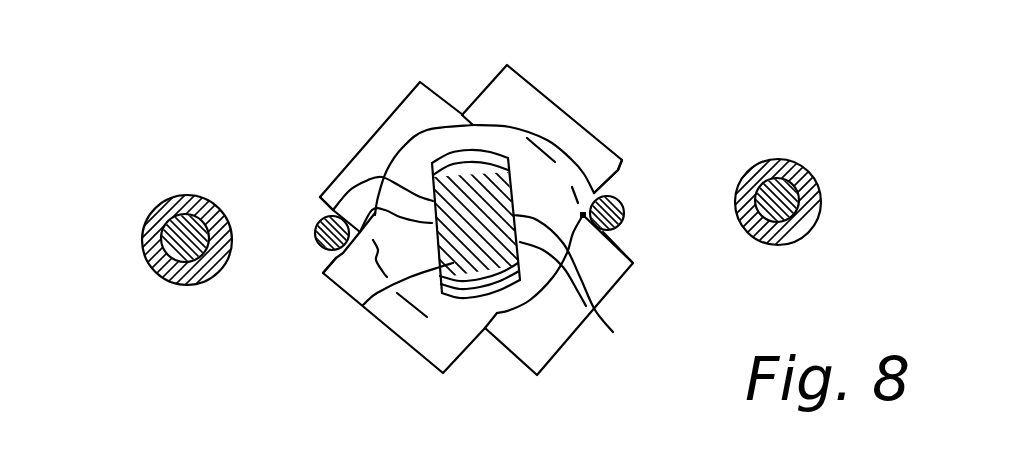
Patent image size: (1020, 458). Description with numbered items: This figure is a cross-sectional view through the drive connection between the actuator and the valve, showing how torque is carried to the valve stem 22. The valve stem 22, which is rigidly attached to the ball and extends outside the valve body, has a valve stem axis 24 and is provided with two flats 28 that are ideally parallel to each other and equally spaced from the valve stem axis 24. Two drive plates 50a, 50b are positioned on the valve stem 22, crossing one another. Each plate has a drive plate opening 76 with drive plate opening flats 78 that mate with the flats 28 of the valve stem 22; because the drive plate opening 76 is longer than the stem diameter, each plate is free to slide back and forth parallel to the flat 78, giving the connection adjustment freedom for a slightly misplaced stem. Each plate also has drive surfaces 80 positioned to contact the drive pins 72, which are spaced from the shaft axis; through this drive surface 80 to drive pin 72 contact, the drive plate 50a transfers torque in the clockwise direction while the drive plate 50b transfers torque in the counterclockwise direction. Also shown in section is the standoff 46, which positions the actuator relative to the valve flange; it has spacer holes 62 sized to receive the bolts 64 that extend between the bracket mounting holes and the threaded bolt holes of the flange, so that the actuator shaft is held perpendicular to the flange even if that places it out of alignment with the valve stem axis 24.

The valve stem 22 is at (365, 303).
The valve stem axis 24 is at (468, 220).
The flat 28 is at (377, 148).
The standoff 46 is at (152, 288).
The drive plate 50a is at (512, 92).
The drive plate 50b is at (378, 143).
The spacer hole 62 is at (197, 213).
The bolt 64 is at (173, 237).
The drive pin 72 is at (313, 242).
The drive plate opening 76 is at (462, 308).
The drive plate opening flat 78 is at (340, 187).
The drive surface 80 is at (323, 198).